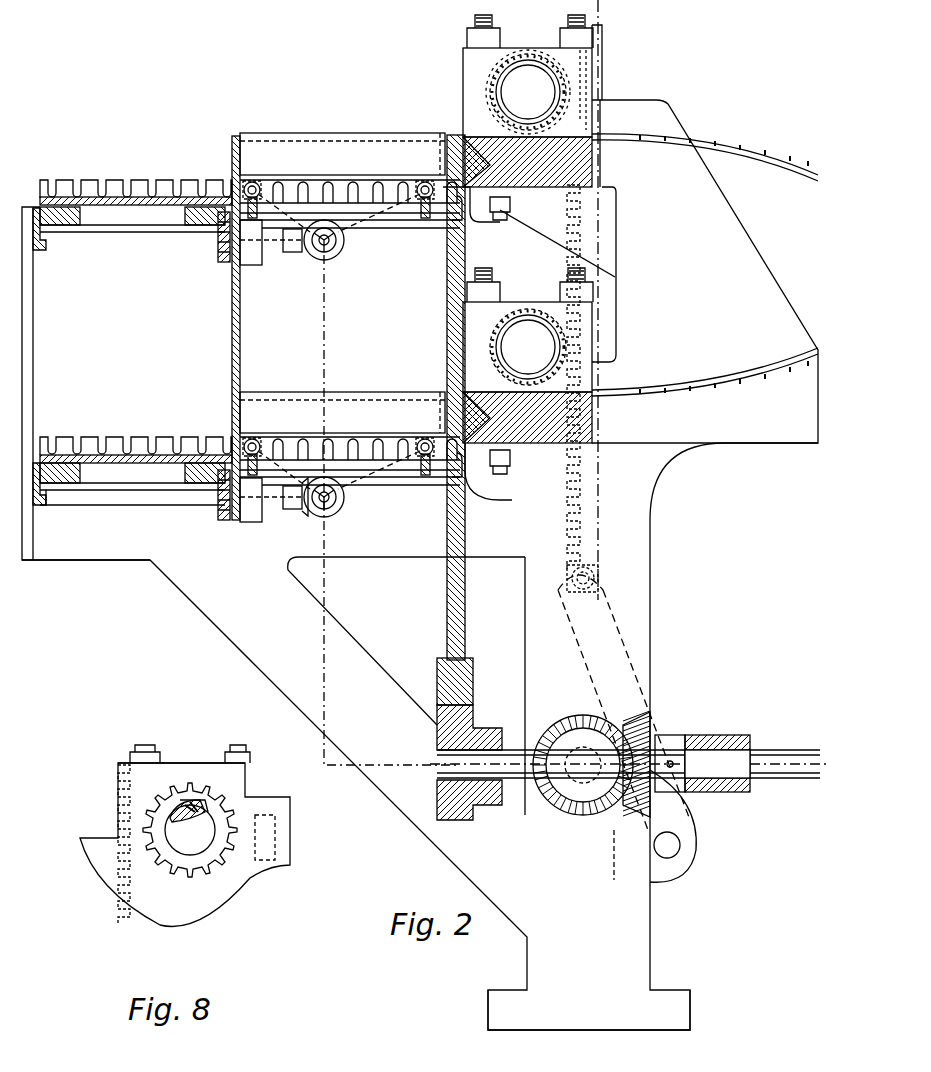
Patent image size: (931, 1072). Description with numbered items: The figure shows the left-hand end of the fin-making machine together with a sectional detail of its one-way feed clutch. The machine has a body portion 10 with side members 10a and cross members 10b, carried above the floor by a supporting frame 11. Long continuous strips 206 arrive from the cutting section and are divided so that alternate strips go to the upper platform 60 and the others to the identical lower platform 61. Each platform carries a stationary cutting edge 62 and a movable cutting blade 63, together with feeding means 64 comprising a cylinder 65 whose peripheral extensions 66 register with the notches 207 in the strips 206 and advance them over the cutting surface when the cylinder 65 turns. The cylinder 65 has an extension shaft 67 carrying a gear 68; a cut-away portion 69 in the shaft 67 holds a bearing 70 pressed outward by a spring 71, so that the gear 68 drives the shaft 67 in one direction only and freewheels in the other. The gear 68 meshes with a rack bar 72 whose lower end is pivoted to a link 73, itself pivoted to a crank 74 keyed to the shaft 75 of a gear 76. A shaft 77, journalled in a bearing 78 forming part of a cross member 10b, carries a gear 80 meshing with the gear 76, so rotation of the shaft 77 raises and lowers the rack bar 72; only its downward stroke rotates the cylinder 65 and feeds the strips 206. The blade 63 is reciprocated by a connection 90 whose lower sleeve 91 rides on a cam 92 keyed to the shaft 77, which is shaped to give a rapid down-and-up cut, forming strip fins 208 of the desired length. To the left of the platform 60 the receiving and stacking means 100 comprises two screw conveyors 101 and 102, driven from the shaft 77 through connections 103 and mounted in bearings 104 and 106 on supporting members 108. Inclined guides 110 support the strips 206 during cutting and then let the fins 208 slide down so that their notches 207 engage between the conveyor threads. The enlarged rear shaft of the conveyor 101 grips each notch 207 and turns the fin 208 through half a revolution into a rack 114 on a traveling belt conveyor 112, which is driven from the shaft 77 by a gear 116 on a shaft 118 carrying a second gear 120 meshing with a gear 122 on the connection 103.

In FIG. 2, the body portion 10 is at (792, 440).
In FIG. 2, the side members 10a is at (62, 545).
In FIG. 2, the cross members 10b is at (545, 445).
In FIG. 2, the supporting frame 11 is at (640, 1018).
In FIG. 2, the upper platform 60 is at (598, 160).
In FIG. 2, the lower platform 61 is at (596, 413).
In FIG. 2, the cutting edge 62 is at (465, 135).
In FIG. 2, the cutting blade 63 is at (463, 110).
In FIG. 2, the feeding means 64 is at (528, 80).
In FIG. 2, the cylinder 65 is at (558, 72).
In FIG. 2, the extensions 66 is at (490, 78).
In FIG. 8, the extension shaft 67 is at (200, 835).
In FIG. 8, the gear 68 is at (193, 862).
In FIG. 8, the cut-away portion 69 is at (180, 808).
In FIG. 8, the bearing 70 is at (195, 808).
In FIG. 8, the spring 71 is at (212, 800).
In FIG. 2, the rack bar 72 is at (600, 495).
In FIG. 8, the rack bar 72 is at (133, 905).
In FIG. 2, the link 73 is at (600, 628).
In FIG. 2, the crank 74 is at (614, 880).
In FIG. 2, the shaft 75 is at (572, 818).
In FIG. 2, the gear 76 is at (555, 800).
In FIG. 2, the shaft 77 is at (800, 770).
In FIG. 2, the bearing 78 is at (725, 792).
In FIG. 2, the gear 80 is at (646, 738).
In FIG. 2, the connection 90 is at (447, 578).
In FIG. 2, the sleeve 91 is at (468, 685).
In FIG. 2, the cam 92 is at (470, 720).
In FIG. 2, the receiving and stacking means 100 is at (262, 111).
In FIG. 2, the screw conveyor 101 is at (255, 190).
In FIG. 2, the screw conveyor 102 is at (423, 198).
In FIG. 2, the connections 103 is at (322, 300).
In FIG. 2, the bearing 104 is at (258, 255).
In FIG. 2, the bearing 106 is at (428, 218).
In FIG. 2, the supporting members 108 is at (393, 212).
In FIG. 2, the guides or baffles 110 is at (340, 152).
In FIG. 2, the conveyor 112 is at (66, 222).
In FIG. 2, the rack 114 is at (138, 210).
In FIG. 2, the gear 116 is at (222, 515).
In FIG. 2, the shaft 118 is at (262, 498).
In FIG. 2, the second gear 120 is at (305, 512).
In FIG. 2, the gear 122 is at (340, 503).
In FIG. 2, the strips 206 is at (738, 378).
In FIG. 2, the notches 207 is at (745, 160).
In FIG. 2, the strip fins 208 is at (168, 185).